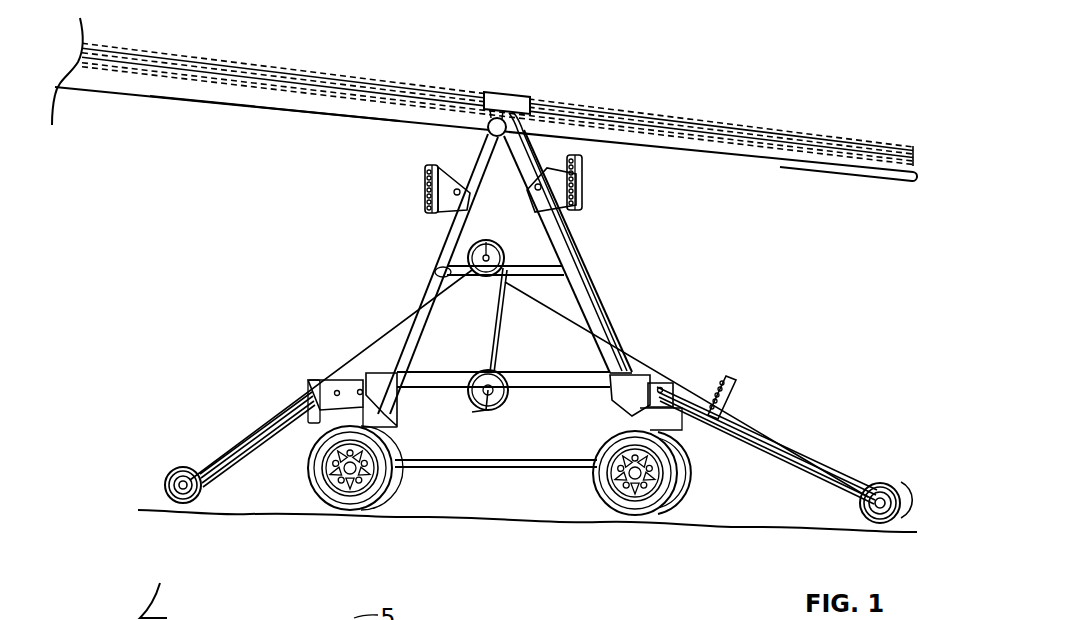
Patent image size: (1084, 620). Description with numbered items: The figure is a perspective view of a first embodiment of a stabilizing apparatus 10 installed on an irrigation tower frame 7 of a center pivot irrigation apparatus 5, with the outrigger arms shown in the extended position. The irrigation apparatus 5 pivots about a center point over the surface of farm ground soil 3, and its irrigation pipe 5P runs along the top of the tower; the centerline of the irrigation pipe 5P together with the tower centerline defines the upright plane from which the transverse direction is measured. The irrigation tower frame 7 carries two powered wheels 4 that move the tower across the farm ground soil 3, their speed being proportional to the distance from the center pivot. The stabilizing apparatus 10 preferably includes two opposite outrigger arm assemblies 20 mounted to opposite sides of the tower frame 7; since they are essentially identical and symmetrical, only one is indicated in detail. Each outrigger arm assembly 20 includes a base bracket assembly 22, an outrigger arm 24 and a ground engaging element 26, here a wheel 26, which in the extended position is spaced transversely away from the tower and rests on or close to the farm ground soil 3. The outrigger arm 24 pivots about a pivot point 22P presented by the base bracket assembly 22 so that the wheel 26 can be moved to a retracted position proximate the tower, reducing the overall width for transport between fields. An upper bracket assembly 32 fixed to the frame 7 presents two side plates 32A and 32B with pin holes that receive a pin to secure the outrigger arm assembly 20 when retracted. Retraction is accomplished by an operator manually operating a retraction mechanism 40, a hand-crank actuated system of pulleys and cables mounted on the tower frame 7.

The farm ground soil 3 is at (756, 529).
The powered wheels 4 is at (402, 498).
The irrigation apparatus 5 is at (380, 44).
The irrigation pipe 5P is at (273, 99).
The irrigation tower frame 7 is at (602, 276).
The stabilizing apparatus 10 is at (683, 211).
The outrigger arm assembly 20 is at (780, 438).
The base bracket assembly 22 is at (737, 380).
The pivot point 22P is at (661, 388).
The outrigger arm 24 is at (836, 498).
The ground engaging element 26 is at (868, 516).
The upper bracket assembly 32 is at (619, 144).
The side plate 32A is at (552, 182).
The side plate 32B is at (582, 165).
The retraction mechanism 40 is at (476, 298).